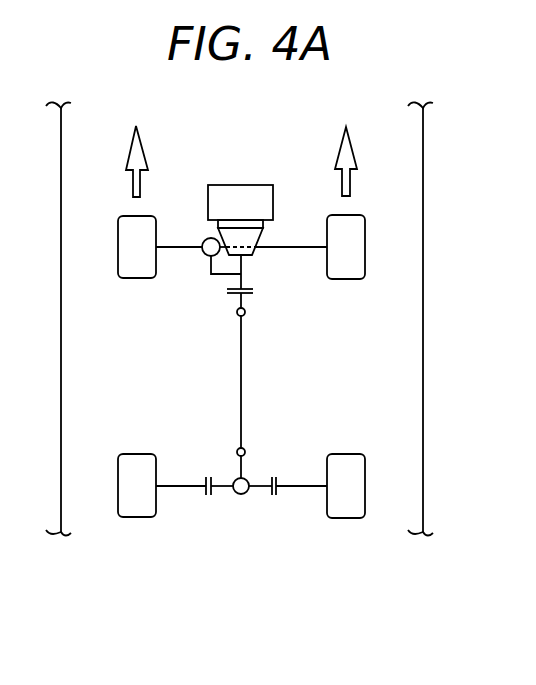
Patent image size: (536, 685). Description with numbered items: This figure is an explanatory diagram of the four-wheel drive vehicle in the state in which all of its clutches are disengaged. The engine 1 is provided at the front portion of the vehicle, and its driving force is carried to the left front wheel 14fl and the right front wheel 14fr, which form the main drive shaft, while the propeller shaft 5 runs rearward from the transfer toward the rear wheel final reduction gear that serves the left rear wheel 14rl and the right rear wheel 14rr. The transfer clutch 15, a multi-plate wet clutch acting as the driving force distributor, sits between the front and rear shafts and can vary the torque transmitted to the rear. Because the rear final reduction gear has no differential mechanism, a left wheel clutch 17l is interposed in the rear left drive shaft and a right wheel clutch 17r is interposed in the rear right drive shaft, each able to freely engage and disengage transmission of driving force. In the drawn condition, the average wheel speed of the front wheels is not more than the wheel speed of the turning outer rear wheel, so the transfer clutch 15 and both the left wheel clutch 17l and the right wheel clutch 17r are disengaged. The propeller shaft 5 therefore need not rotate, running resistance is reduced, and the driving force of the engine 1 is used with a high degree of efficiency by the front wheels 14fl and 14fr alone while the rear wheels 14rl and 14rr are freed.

The engine 1 is at (243, 184).
The propeller shaft 5 is at (242, 398).
The transfer clutch 15 is at (257, 290).
The left front wheel 14fl is at (136, 280).
The right front wheel 14fr is at (345, 280).
The left rear wheel 14rl is at (136, 518).
The right rear wheel 14rr is at (346, 519).
The left wheel clutch 17l is at (207, 497).
The right wheel clutch 17r is at (273, 497).